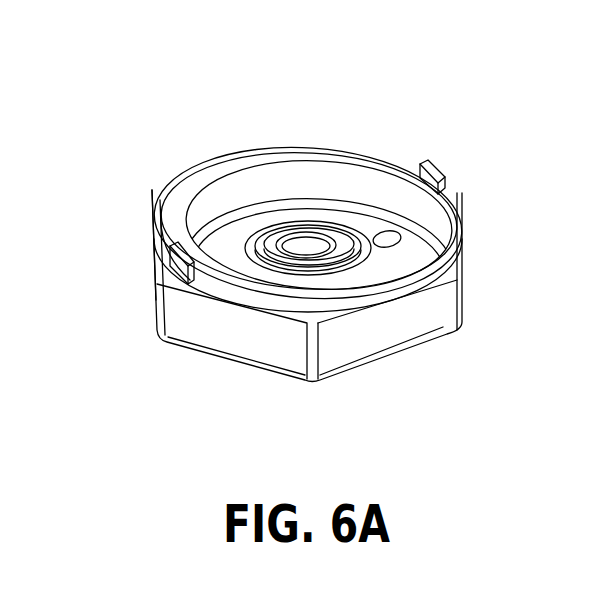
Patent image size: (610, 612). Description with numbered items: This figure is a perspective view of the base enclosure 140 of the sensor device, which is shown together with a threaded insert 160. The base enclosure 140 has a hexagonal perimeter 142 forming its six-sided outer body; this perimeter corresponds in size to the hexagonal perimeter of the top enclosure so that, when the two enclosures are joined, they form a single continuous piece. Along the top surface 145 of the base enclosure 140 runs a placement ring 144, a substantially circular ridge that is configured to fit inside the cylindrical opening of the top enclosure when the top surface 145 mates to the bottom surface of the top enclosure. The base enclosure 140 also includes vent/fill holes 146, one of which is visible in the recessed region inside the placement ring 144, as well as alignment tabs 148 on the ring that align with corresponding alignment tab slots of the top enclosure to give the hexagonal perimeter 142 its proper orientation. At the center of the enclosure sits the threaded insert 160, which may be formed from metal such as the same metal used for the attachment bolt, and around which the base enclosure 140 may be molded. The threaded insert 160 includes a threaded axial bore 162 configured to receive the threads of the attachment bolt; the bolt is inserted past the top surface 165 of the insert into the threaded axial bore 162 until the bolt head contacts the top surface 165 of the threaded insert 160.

The base enclosure 140 is at (168, 118).
The hexagonal perimeter 142 is at (447, 320).
The placement ring 144 is at (418, 268).
The top surface 145 is at (157, 191).
The vent/fill holes 146 is at (402, 240).
The alignment tabs 148 is at (440, 180).
The threaded insert 160 is at (336, 233).
The threaded axial bore 162 is at (312, 248).
The top surface 165 is at (290, 222).